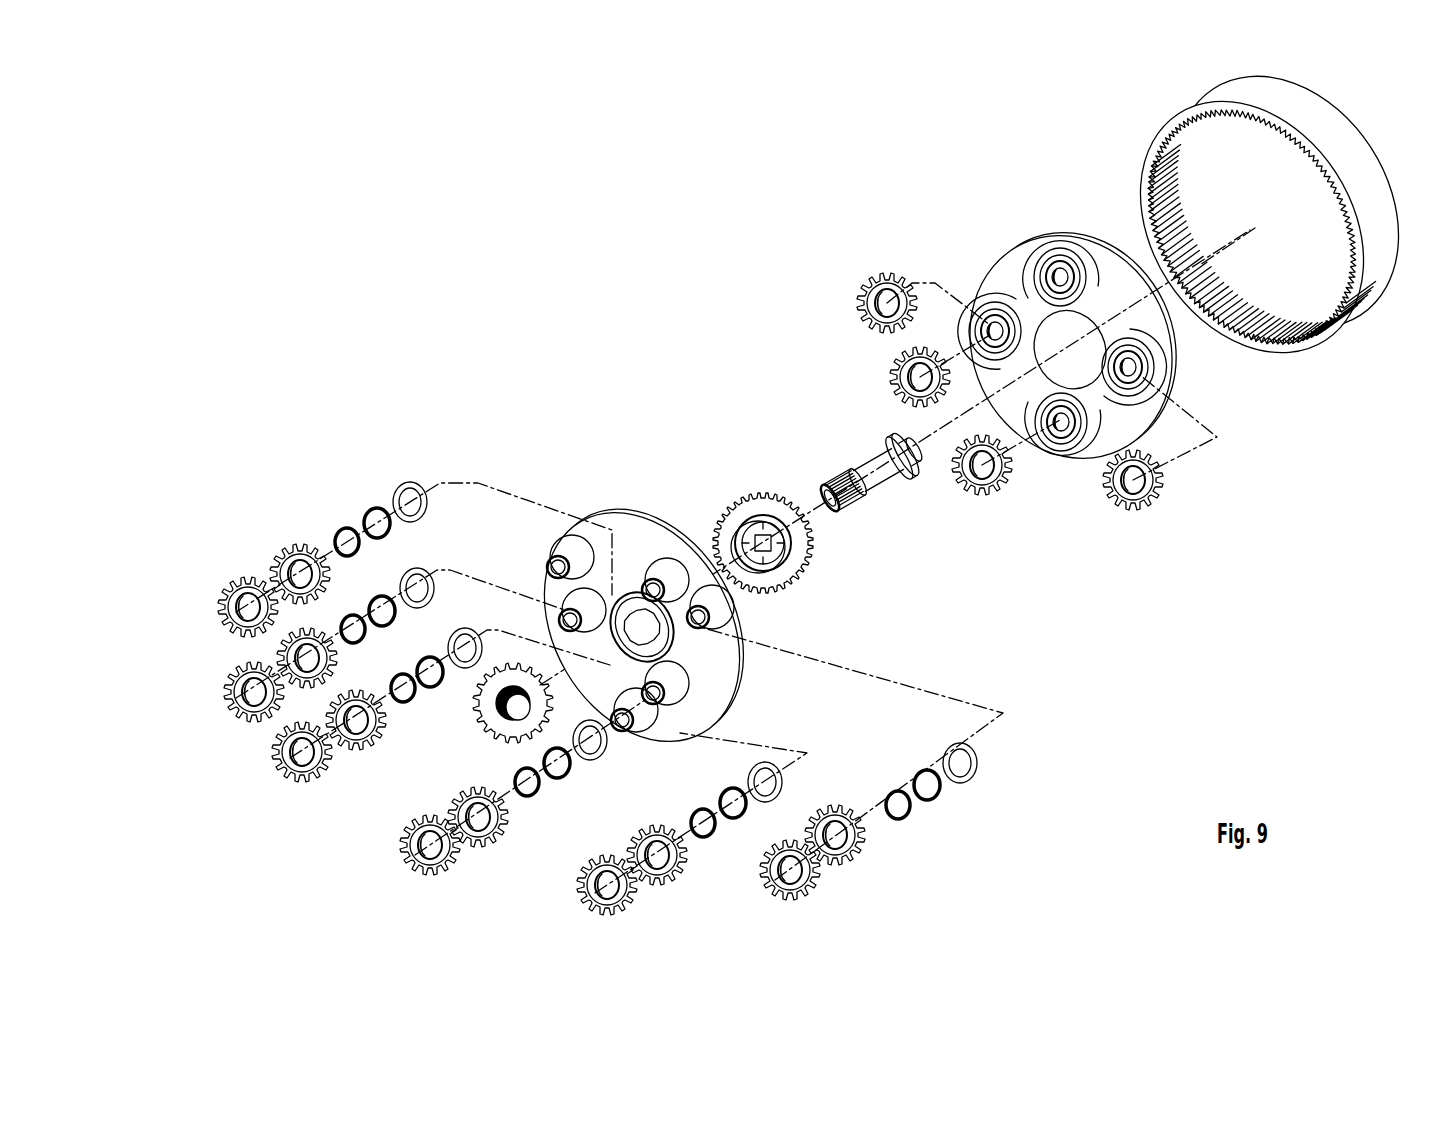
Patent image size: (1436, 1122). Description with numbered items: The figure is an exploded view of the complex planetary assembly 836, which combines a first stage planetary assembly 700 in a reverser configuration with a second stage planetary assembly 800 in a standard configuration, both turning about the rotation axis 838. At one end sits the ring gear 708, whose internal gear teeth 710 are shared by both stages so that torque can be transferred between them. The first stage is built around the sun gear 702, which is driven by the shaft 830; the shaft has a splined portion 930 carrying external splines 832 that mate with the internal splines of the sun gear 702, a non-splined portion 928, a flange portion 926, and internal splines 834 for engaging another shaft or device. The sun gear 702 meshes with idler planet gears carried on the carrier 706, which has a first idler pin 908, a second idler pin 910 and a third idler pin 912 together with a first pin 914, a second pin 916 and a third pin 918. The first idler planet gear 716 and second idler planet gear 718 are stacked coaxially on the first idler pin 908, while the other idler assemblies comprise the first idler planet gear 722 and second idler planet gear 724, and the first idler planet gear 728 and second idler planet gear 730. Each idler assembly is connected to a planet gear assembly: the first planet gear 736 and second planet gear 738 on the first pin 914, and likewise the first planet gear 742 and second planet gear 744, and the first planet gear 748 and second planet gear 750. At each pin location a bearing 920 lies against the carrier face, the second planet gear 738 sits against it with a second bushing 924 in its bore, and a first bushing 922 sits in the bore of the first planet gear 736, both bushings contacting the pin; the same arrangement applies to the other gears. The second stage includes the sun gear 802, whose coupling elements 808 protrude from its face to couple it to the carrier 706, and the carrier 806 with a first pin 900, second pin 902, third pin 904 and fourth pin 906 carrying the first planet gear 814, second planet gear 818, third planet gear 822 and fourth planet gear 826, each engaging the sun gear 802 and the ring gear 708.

The first stage planetary assembly 700 is at (470, 400).
The sun gear 702 is at (495, 727).
The carrier 706 is at (656, 592).
The ring gear 708 is at (1265, 214).
The internal gear teeth 710 is at (1190, 162).
The first idler planet gear 716 is at (598, 912).
The second idler planet gear 718 is at (660, 887).
The first idler planet gear 722 is at (233, 588).
The second idler planet gear 724 is at (285, 552).
The first idler planet gear 728 is at (283, 768).
The second idler planet gear 730 is at (330, 735).
The first planet gear 736 is at (405, 850).
The second planet gear 738 is at (480, 850).
The first planet gear 742 is at (800, 897).
The second planet gear 744 is at (862, 860).
The first planet gear 748 is at (234, 712).
The second planet gear 750 is at (290, 662).
The second stage planetary assembly 800 is at (1340, 497).
The sun gear 802 is at (803, 580).
The carrier 806 is at (1106, 320).
The coupling elements 808 is at (802, 573).
The first planet gear 814 is at (1162, 492).
The second planet gear 818 is at (884, 288).
The third planet gear 822 is at (905, 368).
The fourth planet gear 826 is at (1010, 488).
The shaft 830 is at (917, 538).
The external splines 832 is at (840, 475).
The internal splines 834 is at (843, 490).
The complex planetary assembly 836 is at (505, 155).
The rotation axis 838 is at (1245, 232).
The first pin 900 is at (1145, 365).
The second pin 902 is at (1058, 262).
The third pin 904 is at (990, 322).
The fourth pin 906 is at (1105, 418).
The first idler pin 908 is at (665, 700).
The second idler pin 910 is at (645, 540).
The third idler pin 912 is at (558, 612).
The first pin 914 is at (634, 727).
The second pin 916 is at (712, 622).
The third pin 918 is at (556, 555).
The bearing 920 is at (408, 483).
The first bushing 922 is at (343, 528).
The second bushing 924 is at (375, 508).
The flange portion 926 is at (885, 482).
The non-splined portion 928 is at (863, 452).
The splined portion 930 is at (815, 477).